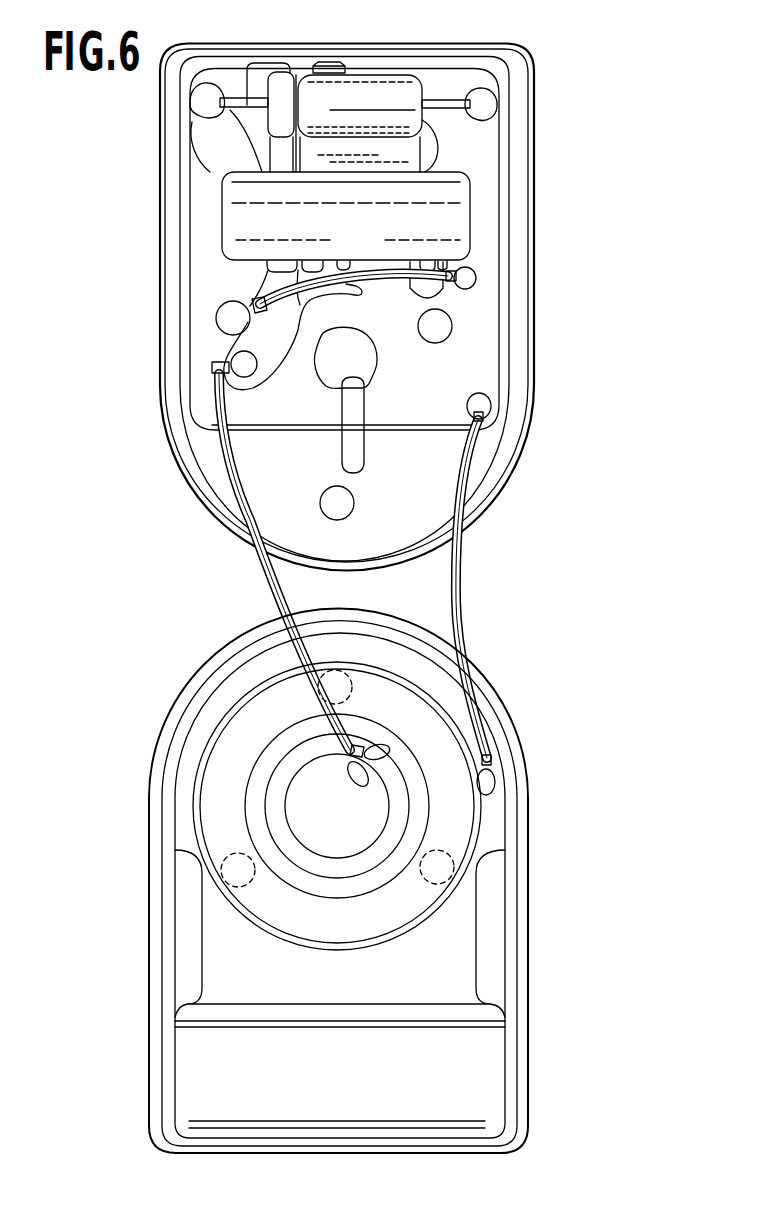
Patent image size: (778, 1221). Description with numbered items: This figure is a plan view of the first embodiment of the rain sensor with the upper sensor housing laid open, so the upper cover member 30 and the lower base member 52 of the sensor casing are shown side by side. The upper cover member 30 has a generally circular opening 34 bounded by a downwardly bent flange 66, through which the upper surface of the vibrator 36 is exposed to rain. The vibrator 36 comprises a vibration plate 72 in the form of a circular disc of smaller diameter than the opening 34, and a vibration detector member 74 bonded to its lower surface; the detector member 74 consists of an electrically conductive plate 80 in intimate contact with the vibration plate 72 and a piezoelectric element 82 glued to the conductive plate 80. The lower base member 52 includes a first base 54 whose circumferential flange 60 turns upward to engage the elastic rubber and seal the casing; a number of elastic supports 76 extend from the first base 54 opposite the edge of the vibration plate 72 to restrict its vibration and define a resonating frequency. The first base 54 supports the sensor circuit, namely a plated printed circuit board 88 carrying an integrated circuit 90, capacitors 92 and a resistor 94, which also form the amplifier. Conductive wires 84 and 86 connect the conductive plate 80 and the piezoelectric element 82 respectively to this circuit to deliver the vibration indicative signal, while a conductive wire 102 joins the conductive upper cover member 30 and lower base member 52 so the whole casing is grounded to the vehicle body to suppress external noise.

The upper cover member 30 is at (530, 794).
The circular opening 34 is at (466, 825).
The vibrator 36 is at (446, 760).
The lower base member 52 is at (548, 343).
The first base 54 is at (512, 420).
The circumferential flange 60 is at (512, 476).
The flange 66 is at (506, 858).
The vibration plate 72 is at (290, 875).
The vibration detector member 74 is at (248, 781).
The elastic supports 76 is at (215, 318).
The electrically conductive plate 80 is at (273, 810).
The piezoelectric element 82 is at (297, 780).
The conductive wire 84 is at (357, 776).
The conductive wire 86 is at (350, 742).
The plated printed circuit board 88 is at (487, 237).
The integrated circuit 90 is at (228, 222).
The capacitors 92 is at (408, 152).
The resistor 94 is at (332, 60).
The conductive wire 102 is at (461, 603).